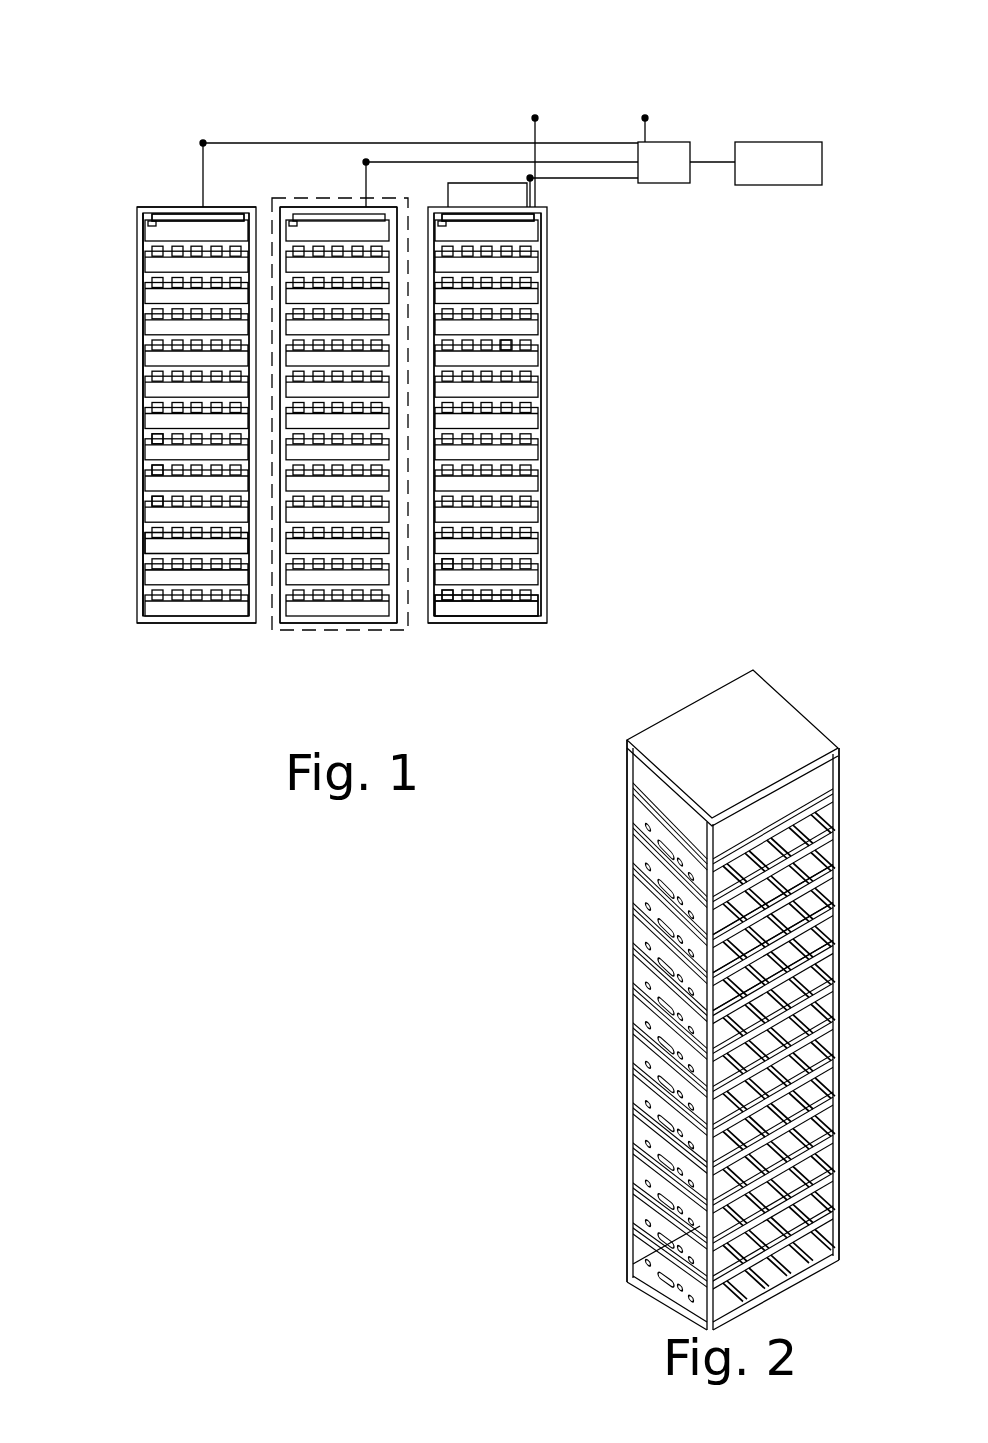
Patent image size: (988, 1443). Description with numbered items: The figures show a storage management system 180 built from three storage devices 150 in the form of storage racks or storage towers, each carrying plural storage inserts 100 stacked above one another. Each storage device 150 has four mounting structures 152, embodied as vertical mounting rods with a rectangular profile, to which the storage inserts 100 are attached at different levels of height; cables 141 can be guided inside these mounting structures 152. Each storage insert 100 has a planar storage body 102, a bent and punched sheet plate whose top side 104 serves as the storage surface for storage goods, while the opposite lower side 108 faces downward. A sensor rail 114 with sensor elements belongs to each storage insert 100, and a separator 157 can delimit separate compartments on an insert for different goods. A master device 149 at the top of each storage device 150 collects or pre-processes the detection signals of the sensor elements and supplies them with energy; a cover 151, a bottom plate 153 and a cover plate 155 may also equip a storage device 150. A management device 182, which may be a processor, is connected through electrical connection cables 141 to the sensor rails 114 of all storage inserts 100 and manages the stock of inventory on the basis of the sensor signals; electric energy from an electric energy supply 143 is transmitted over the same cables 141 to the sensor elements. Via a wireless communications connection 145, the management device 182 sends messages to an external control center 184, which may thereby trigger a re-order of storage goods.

In FIG. 1, the storage insert 100 is at (126, 363).
In FIG. 2, the storage insert 100 is at (610, 910).
In FIG. 1, the storage body 102 is at (143, 437).
In FIG. 2, the storage body 102 is at (805, 915).
In FIG. 1, the top side 104 is at (143, 528).
In FIG. 2, the top side 104 is at (795, 882).
In FIG. 1, the lower side 108 is at (143, 570).
In FIG. 2, the lower side 108 is at (818, 967).
In FIG. 1, the sensor rail 114 is at (143, 350).
In FIG. 1, the electrical connection cable 141 is at (152, 226).
In FIG. 1, the electric energy supply 143 is at (537, 116).
In FIG. 1, the wireless communications connection 145 is at (720, 164).
In FIG. 1, the master device 149 is at (213, 216).
In FIG. 1, the storage device 150 is at (134, 204).
In FIG. 2, the storage device 150 is at (622, 734).
In FIG. 1, the cover 151 is at (462, 198).
In FIG. 1, the mounting structure 152 is at (150, 595).
In FIG. 2, the mounting structure 152 is at (628, 782).
In FIG. 1, the bottom plate 153 is at (247, 615).
In FIG. 2, the bottom plate 153 is at (772, 1278).
In FIG. 1, the cover plate 155 is at (186, 212).
In FIG. 2, the cover plate 155 is at (778, 715).
In FIG. 1, the separator 157 is at (505, 342).
In FIG. 1, the storage management system 180 is at (743, 84).
In FIG. 1, the management device 182 is at (670, 142).
In FIG. 1, the control center 184 is at (800, 142).